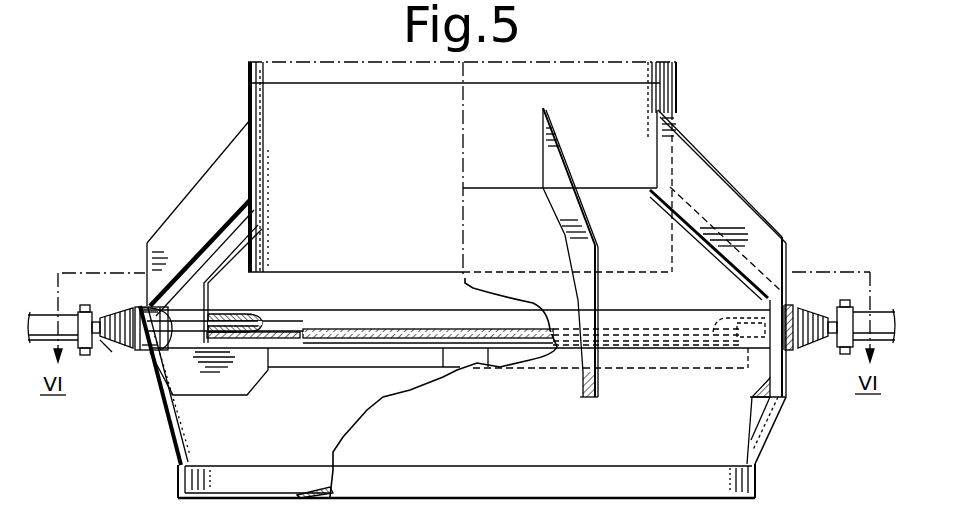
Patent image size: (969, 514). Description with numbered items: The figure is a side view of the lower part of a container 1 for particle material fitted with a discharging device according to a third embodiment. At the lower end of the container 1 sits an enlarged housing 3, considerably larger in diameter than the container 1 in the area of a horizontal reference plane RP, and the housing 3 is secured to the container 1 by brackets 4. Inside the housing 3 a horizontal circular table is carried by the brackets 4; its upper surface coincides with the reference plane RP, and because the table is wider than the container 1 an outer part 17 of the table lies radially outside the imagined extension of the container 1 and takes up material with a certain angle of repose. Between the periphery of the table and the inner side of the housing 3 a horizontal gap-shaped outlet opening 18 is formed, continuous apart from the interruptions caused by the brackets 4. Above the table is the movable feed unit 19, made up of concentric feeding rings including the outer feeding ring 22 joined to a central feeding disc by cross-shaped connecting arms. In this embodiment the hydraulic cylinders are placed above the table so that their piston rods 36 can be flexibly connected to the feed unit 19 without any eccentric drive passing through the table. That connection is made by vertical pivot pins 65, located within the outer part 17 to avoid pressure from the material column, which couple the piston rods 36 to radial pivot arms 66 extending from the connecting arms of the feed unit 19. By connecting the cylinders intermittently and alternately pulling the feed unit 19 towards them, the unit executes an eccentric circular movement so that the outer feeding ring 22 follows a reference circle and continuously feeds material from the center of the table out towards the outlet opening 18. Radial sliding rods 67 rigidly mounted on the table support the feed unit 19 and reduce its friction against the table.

The container 1 is at (677, 97).
The housing 3 is at (773, 428).
The brackets 4 is at (708, 177).
The outer part of the table 17 is at (195, 367).
The outlet opening 18 is at (163, 347).
The feed unit 19 is at (341, 324).
The outer feeding ring 22 is at (298, 346).
The piston rods 36 is at (143, 303).
The pivot pins 65 is at (218, 313).
The pivot arms 66 is at (286, 322).
The sliding rods 67 is at (387, 330).
The reference plane RP is at (106, 346).